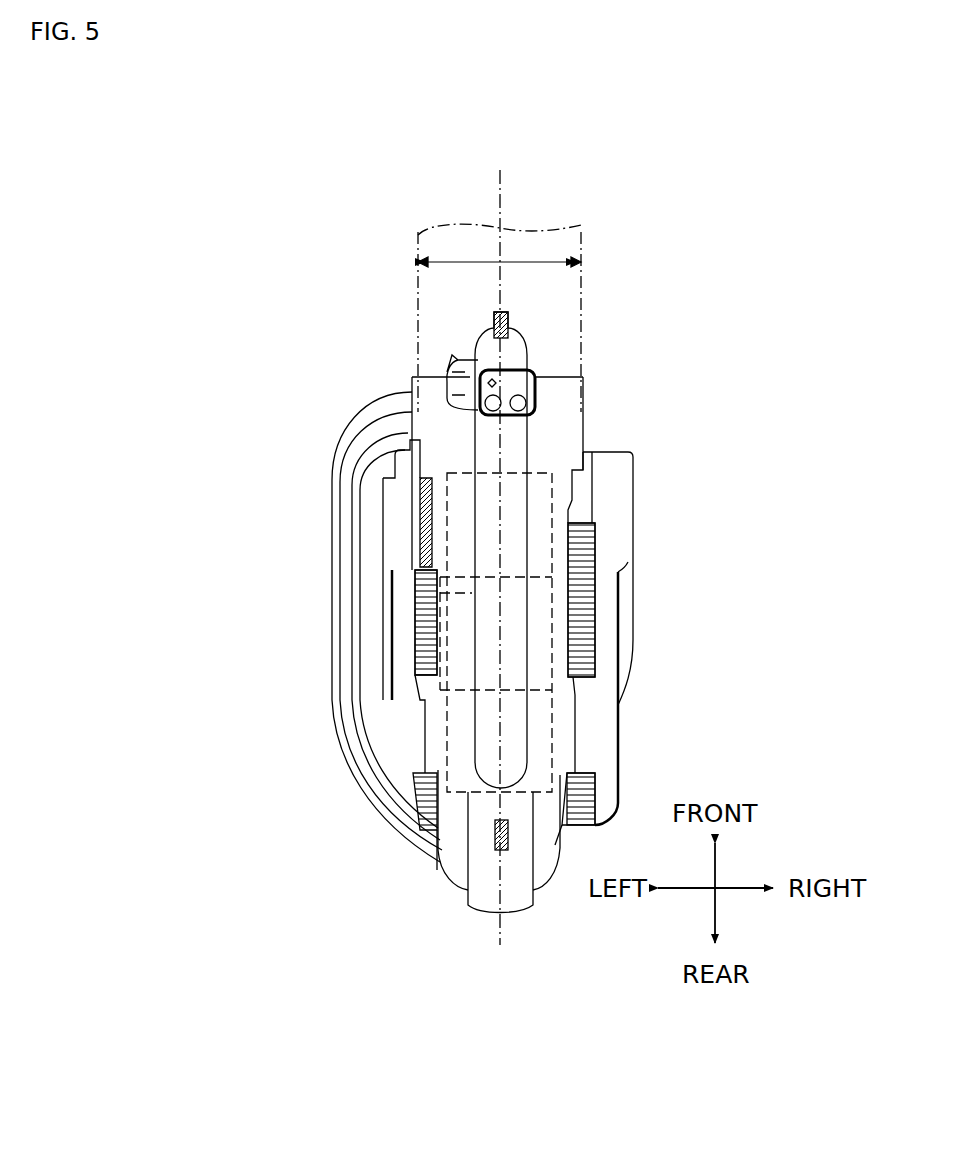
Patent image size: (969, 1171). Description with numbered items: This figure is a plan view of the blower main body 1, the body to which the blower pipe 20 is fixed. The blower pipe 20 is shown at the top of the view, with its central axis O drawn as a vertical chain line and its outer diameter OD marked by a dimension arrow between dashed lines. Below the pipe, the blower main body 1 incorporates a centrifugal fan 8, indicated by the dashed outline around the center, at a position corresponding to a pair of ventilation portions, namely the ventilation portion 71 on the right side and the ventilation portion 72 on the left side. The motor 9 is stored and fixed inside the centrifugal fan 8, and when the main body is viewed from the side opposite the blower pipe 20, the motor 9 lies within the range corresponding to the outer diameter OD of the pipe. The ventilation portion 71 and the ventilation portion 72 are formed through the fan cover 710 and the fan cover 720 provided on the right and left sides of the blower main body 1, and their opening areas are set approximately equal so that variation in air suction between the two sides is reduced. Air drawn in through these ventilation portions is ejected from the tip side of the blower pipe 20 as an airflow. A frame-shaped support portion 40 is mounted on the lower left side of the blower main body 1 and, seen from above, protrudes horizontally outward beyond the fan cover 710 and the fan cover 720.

The blower main body 1 is at (689, 613).
The centrifugal fan 8 is at (538, 497).
The motor 9 is at (423, 572).
The blower pipe 20 is at (436, 332).
The support portion 40 is at (345, 673).
The ventilation portion 71 is at (580, 565).
The ventilation portion 72 is at (414, 625).
The fan cover 710 is at (583, 700).
The fan cover 720 is at (413, 745).
The central axis O is at (495, 200).
The outer diameter OD is at (546, 262).